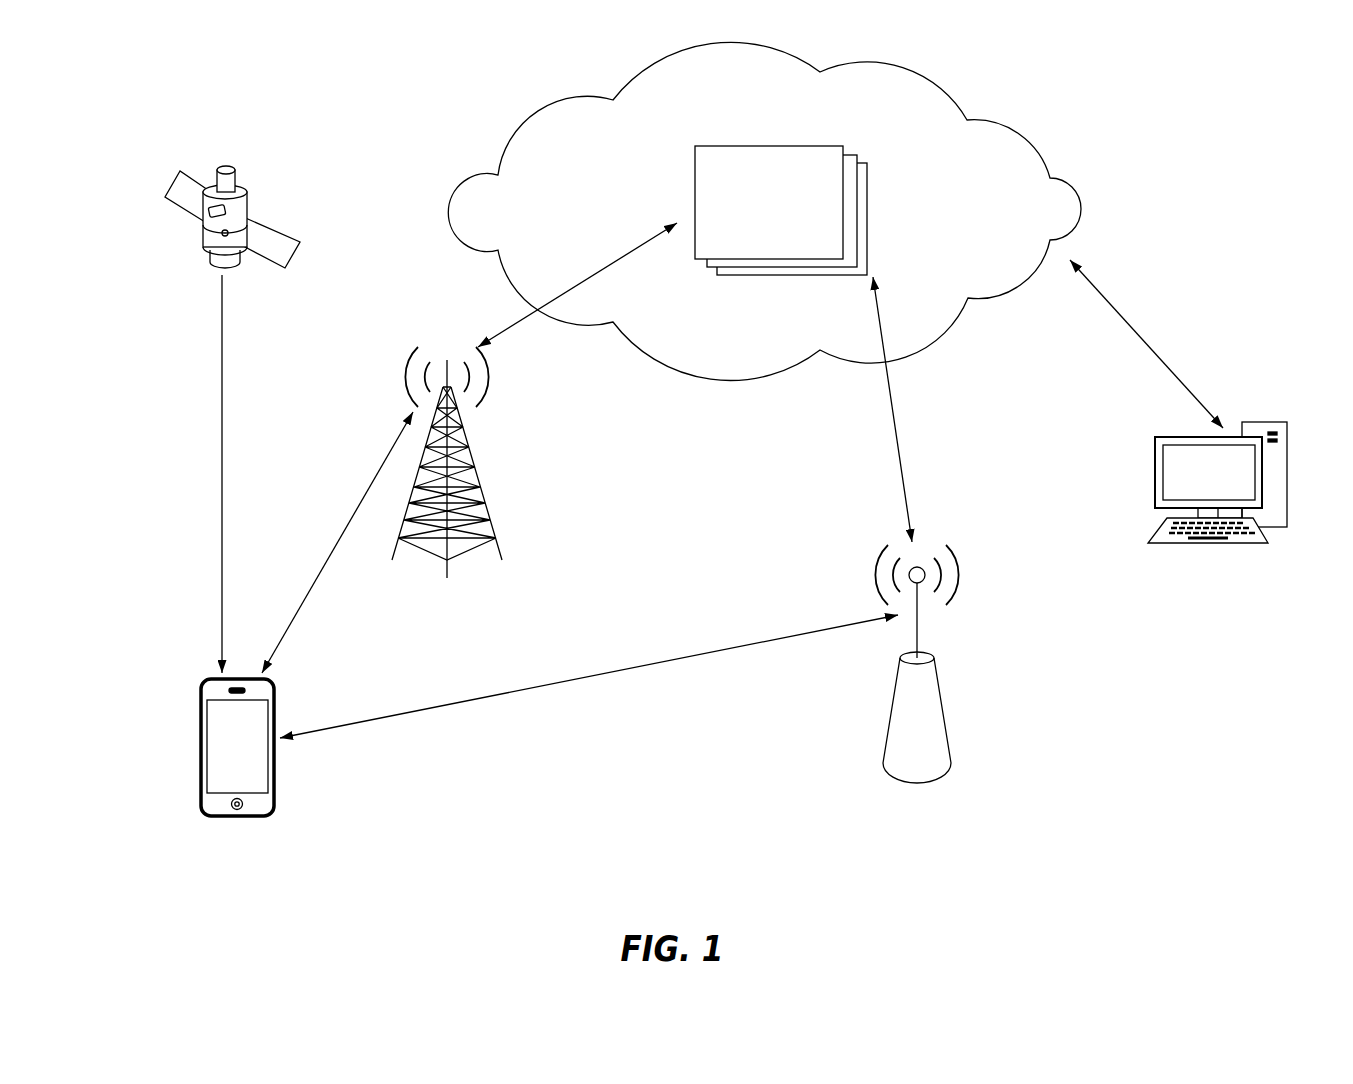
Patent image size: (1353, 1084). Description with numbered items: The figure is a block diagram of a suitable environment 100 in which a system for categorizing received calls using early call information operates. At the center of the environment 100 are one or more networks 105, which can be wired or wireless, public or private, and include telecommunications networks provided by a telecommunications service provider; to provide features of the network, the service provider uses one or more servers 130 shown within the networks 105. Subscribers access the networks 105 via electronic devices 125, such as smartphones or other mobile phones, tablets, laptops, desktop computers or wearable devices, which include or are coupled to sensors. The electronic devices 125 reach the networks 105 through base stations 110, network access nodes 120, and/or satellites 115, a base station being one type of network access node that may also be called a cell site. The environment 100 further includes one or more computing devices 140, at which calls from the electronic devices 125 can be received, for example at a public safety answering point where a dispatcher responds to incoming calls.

The environment 100 is at (1253, 105).
The networks 105 is at (764, 211).
The base stations 110 is at (452, 492).
The satellites 115 is at (197, 221).
The network access nodes 120 is at (923, 694).
The electronic devices 125 is at (238, 782).
The servers 130 is at (755, 228).
The computing devices 140 is at (1233, 609).